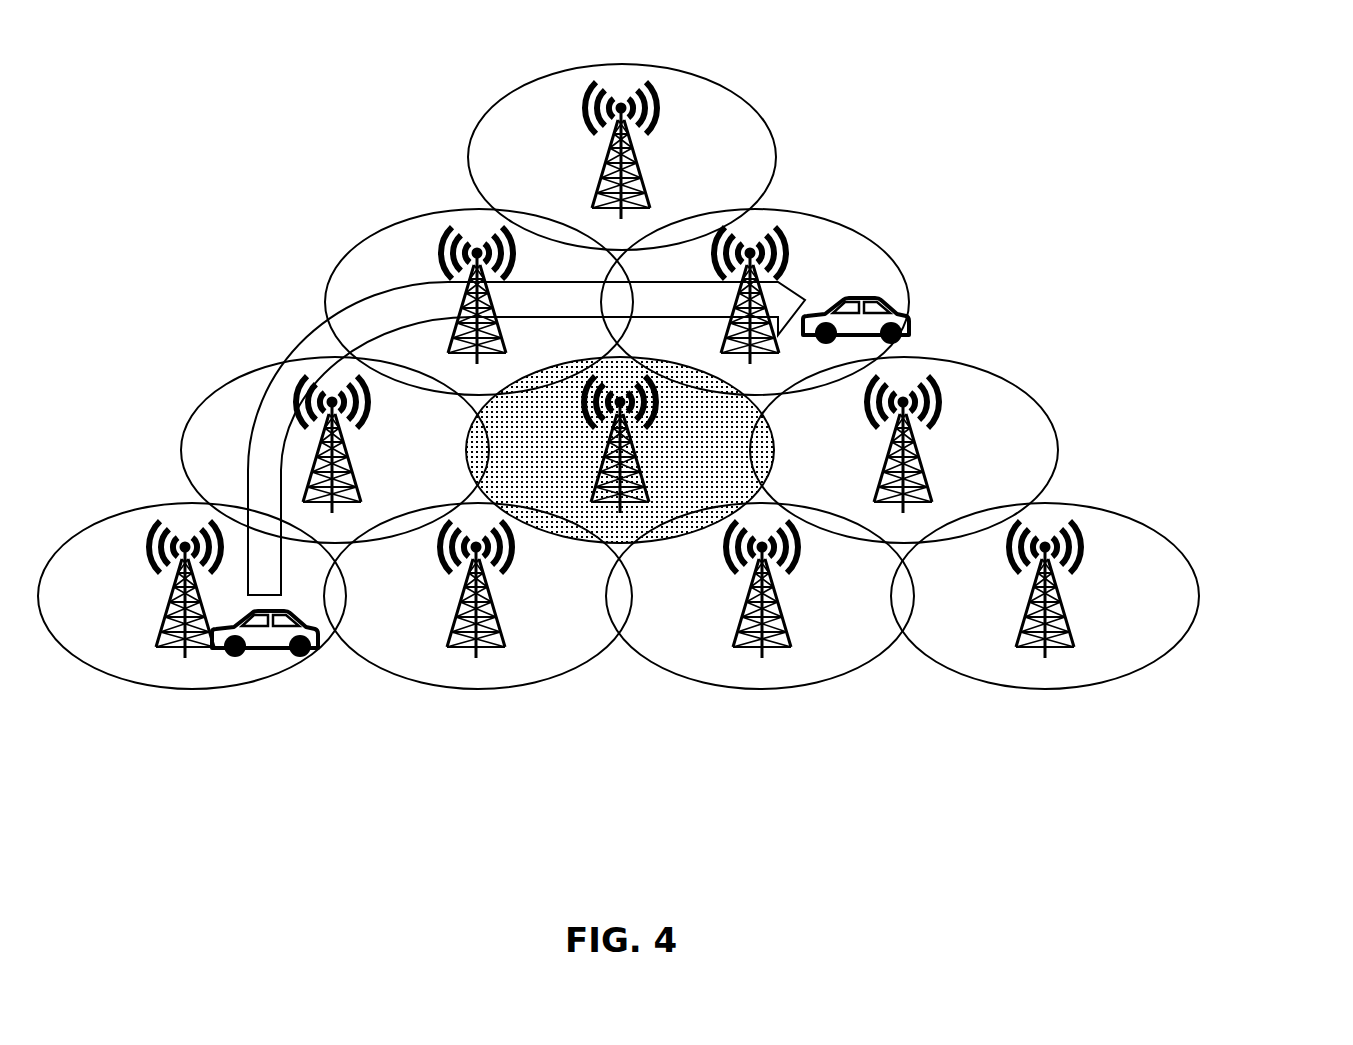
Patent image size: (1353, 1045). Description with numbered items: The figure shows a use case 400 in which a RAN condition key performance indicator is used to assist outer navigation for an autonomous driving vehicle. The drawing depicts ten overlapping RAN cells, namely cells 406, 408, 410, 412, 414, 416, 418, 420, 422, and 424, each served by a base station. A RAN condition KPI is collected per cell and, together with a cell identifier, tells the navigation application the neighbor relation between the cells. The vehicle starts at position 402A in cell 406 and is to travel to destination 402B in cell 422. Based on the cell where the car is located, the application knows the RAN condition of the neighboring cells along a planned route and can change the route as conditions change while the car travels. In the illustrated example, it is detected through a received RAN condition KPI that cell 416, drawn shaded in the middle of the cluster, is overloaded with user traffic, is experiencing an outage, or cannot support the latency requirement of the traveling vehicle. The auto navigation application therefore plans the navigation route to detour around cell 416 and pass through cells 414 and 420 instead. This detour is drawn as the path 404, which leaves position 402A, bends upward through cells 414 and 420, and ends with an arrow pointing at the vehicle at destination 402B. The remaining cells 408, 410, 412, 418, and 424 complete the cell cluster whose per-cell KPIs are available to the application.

The use case 400 is at (1268, 73).
The position 402A is at (280, 657).
The destination 402B is at (880, 306).
The travel path of vehicle 404 is at (325, 345).
The cell 406 is at (100, 522).
The cell 408 is at (480, 688).
The cell 410 is at (780, 688).
The cell 412 is at (1070, 688).
The cell 414 is at (253, 372).
The cell 416 is at (785, 386).
The cell 418 is at (1025, 392).
The cell 420 is at (353, 254).
The cell 422 is at (878, 248).
The cell 424 is at (708, 80).